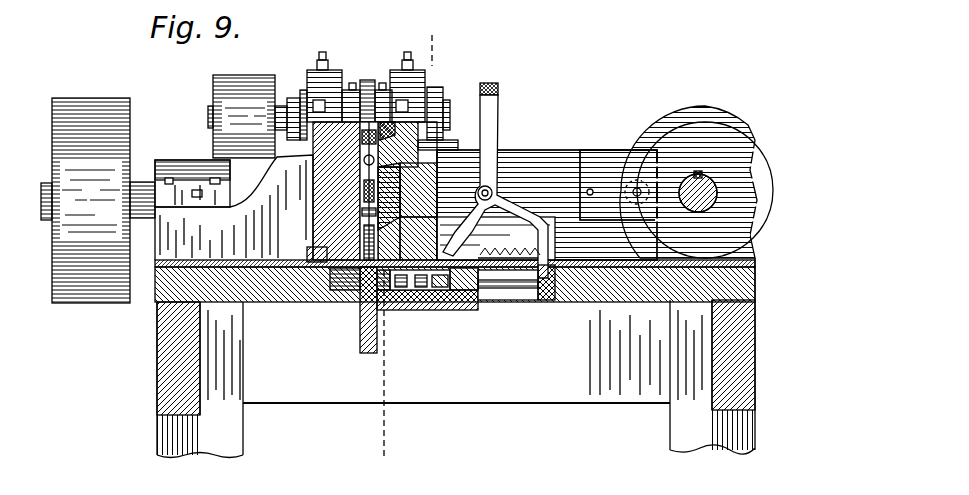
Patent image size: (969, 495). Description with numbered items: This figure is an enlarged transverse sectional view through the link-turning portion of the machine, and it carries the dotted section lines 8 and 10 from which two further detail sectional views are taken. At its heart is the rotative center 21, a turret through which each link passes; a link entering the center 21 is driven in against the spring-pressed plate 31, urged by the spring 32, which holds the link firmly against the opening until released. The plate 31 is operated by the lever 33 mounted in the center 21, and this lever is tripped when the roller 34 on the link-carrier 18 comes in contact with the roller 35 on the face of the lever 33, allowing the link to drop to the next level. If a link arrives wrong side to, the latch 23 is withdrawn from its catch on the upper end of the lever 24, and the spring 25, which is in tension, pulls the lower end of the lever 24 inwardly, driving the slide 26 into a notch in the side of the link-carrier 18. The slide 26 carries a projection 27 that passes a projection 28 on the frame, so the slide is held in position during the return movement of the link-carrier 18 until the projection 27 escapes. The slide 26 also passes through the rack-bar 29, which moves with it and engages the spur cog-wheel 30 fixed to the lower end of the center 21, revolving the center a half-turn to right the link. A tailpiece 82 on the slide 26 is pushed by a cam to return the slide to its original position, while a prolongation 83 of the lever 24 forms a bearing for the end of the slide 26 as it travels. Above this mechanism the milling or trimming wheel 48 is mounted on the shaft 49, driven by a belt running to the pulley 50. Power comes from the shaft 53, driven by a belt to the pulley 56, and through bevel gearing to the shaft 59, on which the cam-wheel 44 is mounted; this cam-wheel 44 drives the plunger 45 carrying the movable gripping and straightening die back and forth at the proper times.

The dotted line 8 8 is at (470, 30).
The dotted line 10 10 is at (585, 294).
The link-carrier 18 is at (362, 230).
The rotative center 21 is at (360, 200).
The latch 23 is at (500, 97).
The lever 24 is at (500, 137).
The spring 25 is at (495, 186).
The slide 26 is at (513, 305).
The projection 27 is at (455, 308).
The projection 28 is at (408, 310).
The rack-bar 29 is at (387, 312).
The spur cog-wheel 30 is at (312, 305).
The spring-pressed plate 31 is at (318, 158).
The spring 32 is at (392, 120).
The lever 33 is at (400, 182).
The roller 34 is at (362, 212).
The roller 35 is at (398, 210).
The cam-wheel 44 is at (722, 115).
The plunger 45 is at (585, 156).
The milling or trimming wheel 48 is at (367, 84).
The shaft 49 is at (208, 115).
The pulley 50 is at (256, 76).
The shaft 53 is at (146, 185).
The pulley 56 is at (75, 105).
The shaft 59 is at (718, 195).
The tailpiece 82 is at (460, 310).
The prolongation 83 is at (545, 300).